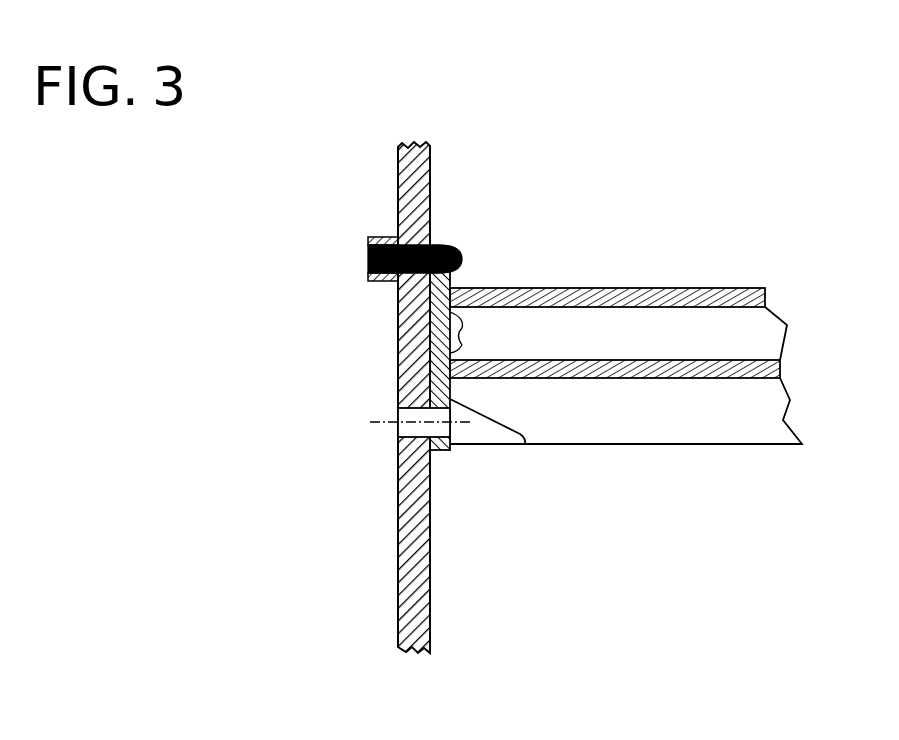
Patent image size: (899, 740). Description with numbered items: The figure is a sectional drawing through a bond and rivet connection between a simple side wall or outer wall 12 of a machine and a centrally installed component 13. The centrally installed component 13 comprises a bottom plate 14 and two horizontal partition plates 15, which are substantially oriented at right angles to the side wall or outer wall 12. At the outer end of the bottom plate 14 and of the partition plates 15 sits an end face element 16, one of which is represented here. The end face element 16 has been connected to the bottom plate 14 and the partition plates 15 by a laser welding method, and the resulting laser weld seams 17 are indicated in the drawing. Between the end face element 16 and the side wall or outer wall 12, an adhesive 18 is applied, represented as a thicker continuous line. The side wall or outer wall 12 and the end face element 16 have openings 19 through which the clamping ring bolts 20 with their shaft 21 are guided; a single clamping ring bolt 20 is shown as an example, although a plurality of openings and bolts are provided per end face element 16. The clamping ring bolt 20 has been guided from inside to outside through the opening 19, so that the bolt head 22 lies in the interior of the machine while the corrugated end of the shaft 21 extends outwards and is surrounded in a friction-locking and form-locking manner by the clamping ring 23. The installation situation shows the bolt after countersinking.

The side wall or outer wall 12 is at (423, 565).
The centrally installed component 13 is at (664, 344).
The bottom plate 14 is at (617, 431).
The horizontal partition plates 15 is at (740, 288).
The end face element 16 is at (522, 447).
The laser weld seams 17 is at (460, 326).
The adhesive 18 is at (431, 216).
The openings 19 is at (403, 224).
The clamping ring bolt 20 is at (406, 273).
The shaft 21 is at (398, 290).
The bolt head 22 is at (463, 259).
The clamping ring 23 is at (372, 279).